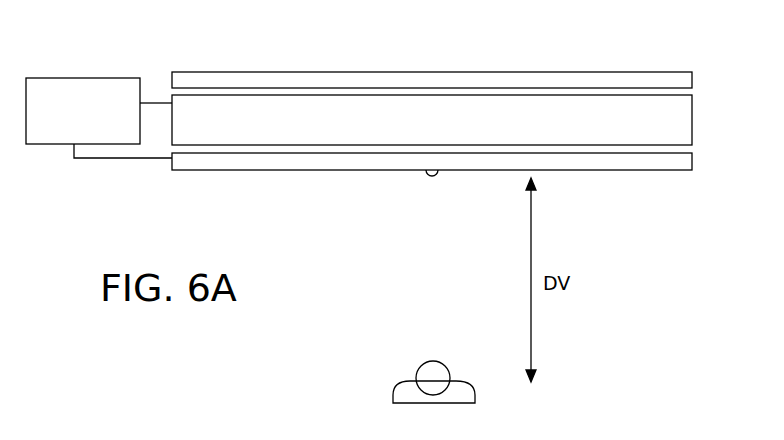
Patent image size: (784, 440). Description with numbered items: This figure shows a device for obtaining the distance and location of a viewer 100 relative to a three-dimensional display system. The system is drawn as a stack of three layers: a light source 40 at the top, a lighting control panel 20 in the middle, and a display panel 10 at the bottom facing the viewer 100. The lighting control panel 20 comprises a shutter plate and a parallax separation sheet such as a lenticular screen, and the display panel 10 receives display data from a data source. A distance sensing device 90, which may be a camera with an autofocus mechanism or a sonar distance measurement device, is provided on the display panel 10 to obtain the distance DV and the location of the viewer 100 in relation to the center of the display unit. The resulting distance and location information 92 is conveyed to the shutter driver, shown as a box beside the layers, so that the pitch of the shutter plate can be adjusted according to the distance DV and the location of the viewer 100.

The light source 40 is at (640, 72).
The lighting control panel 20 is at (692, 115).
The display panel 10 is at (655, 170).
The distance sensing device 90 is at (432, 176).
The distance and location information 92 is at (140, 176).
The viewer 100 is at (455, 397).